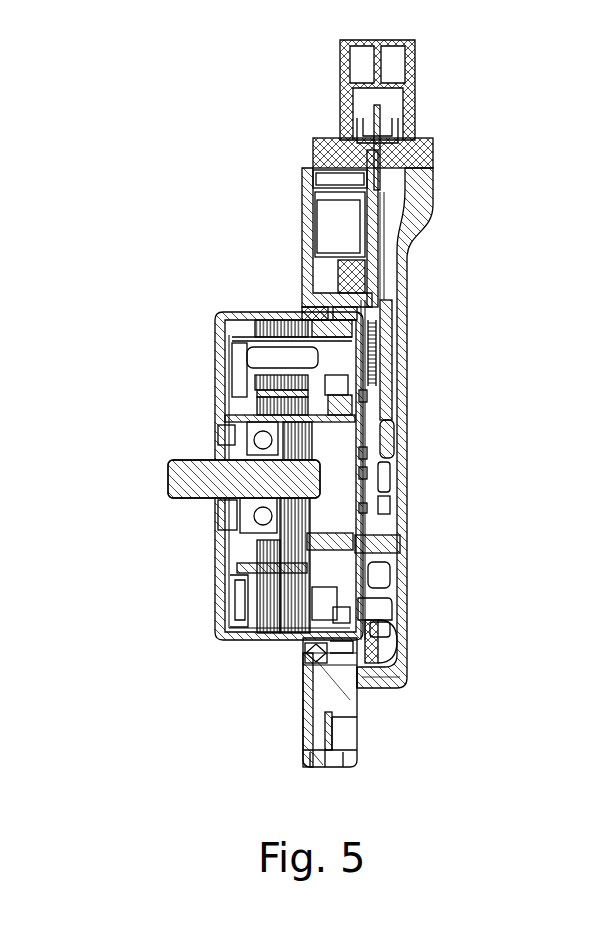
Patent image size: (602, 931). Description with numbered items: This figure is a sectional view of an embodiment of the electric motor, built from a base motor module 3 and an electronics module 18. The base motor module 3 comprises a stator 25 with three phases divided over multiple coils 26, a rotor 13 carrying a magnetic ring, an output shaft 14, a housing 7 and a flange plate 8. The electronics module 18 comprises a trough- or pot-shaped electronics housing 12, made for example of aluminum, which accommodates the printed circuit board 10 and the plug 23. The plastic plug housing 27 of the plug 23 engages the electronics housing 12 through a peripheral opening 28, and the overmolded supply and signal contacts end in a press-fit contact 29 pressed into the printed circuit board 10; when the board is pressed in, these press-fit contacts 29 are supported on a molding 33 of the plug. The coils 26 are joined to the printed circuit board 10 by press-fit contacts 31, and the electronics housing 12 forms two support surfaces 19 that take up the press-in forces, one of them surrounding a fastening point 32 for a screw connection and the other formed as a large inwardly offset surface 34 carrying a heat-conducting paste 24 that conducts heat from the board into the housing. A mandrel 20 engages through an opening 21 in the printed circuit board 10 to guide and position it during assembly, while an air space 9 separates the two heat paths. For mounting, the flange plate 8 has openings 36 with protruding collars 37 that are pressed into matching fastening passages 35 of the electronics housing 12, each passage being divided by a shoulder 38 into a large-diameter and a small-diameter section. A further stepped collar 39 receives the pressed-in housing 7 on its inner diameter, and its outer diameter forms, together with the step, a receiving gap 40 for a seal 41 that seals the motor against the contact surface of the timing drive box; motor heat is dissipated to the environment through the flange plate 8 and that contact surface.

The base motor module 3 is at (175, 275).
The housing 7 is at (218, 622).
The flange plate 8 is at (307, 278).
The air space as insulation space 9 is at (388, 662).
The printed circuit board 10 is at (410, 405).
The electronics housing 12 is at (398, 450).
The rotor 13 is at (232, 568).
The output shaft 14 is at (180, 476).
The electronics module 18 is at (505, 670).
The support surface 19 is at (430, 194).
The mandrel 20 is at (395, 612).
The opening 21 is at (398, 640).
The plug 23 is at (415, 100).
The heat-conducting paste 24 is at (395, 318).
The stator 25 is at (275, 640).
The coil 26 is at (243, 598).
The plug housing 27 is at (405, 135).
The opening 28 is at (325, 195).
The press-fit contact 29 is at (398, 588).
The press-fit contacts 31 is at (307, 232).
The fastening point 32 is at (400, 545).
The molding 33 is at (400, 275).
The inwardly offset surface 34 is at (386, 360).
The fastening passage 35 is at (340, 745).
The openings 36 is at (318, 718).
The collar 37 is at (311, 768).
The shoulder 38 is at (343, 768).
The stepped collar 39 is at (355, 695).
The receiving gap 40 is at (332, 660).
The seal 41 is at (318, 660).